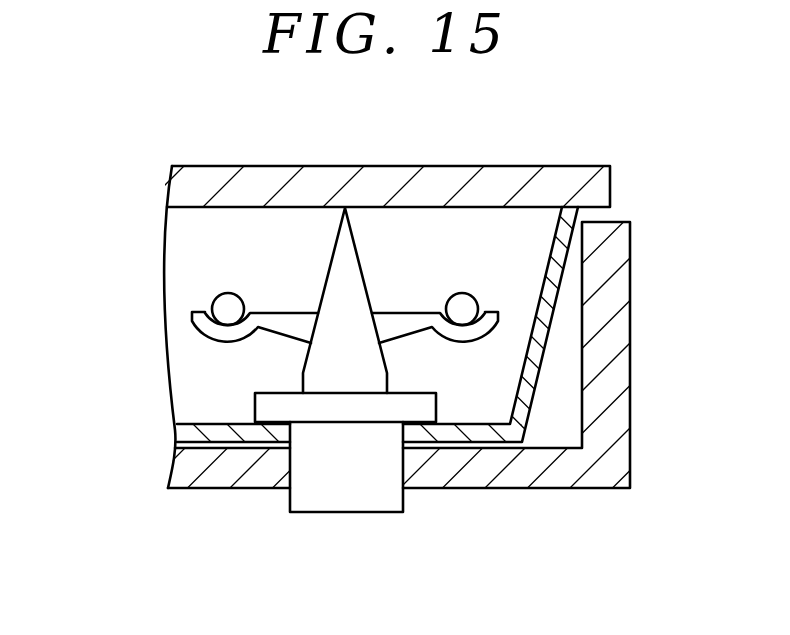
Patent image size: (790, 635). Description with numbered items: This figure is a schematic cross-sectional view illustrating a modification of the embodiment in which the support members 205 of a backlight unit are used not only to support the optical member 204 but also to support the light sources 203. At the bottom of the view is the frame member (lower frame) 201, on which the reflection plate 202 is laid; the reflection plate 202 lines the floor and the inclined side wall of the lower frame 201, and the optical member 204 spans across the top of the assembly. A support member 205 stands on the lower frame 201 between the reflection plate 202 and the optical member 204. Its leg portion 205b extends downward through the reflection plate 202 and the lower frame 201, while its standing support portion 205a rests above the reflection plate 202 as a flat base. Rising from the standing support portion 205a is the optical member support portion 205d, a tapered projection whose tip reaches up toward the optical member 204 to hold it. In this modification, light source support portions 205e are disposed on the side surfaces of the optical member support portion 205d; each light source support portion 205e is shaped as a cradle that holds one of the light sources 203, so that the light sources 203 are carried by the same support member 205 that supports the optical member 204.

The frame member (lower frame) 201 is at (606, 382).
The reflection plate 202 is at (551, 305).
The light sources 203 is at (233, 306).
The optical member 204 is at (565, 178).
The support members 205 is at (274, 340).
The standing support portions 205a is at (300, 409).
The leg portions 205b is at (355, 480).
The optical member support portions 205d is at (340, 278).
The light source support portions 205e is at (192, 316).